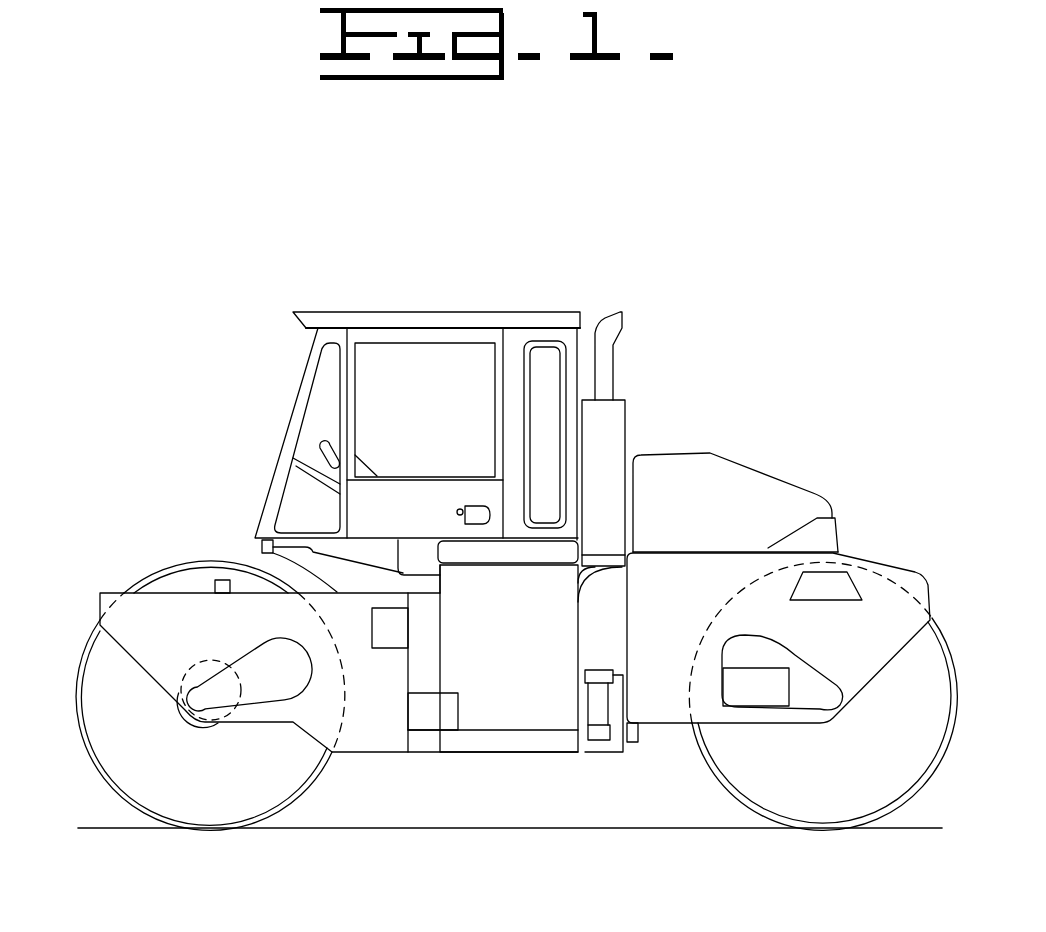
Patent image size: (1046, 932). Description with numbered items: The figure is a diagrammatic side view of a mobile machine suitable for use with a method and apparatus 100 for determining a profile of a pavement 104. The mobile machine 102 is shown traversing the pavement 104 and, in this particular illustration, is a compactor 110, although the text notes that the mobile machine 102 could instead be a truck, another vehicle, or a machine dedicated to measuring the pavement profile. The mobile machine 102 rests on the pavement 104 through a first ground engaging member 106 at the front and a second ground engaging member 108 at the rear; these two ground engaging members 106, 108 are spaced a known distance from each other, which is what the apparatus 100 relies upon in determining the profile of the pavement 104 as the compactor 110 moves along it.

The apparatus 100 is at (318, 258).
The mobile machine 102 is at (285, 428).
The pavement 104 is at (487, 828).
The first ground engaging member 106 is at (216, 828).
The second ground engaging member 108 is at (830, 828).
The compactor 110 is at (277, 495).